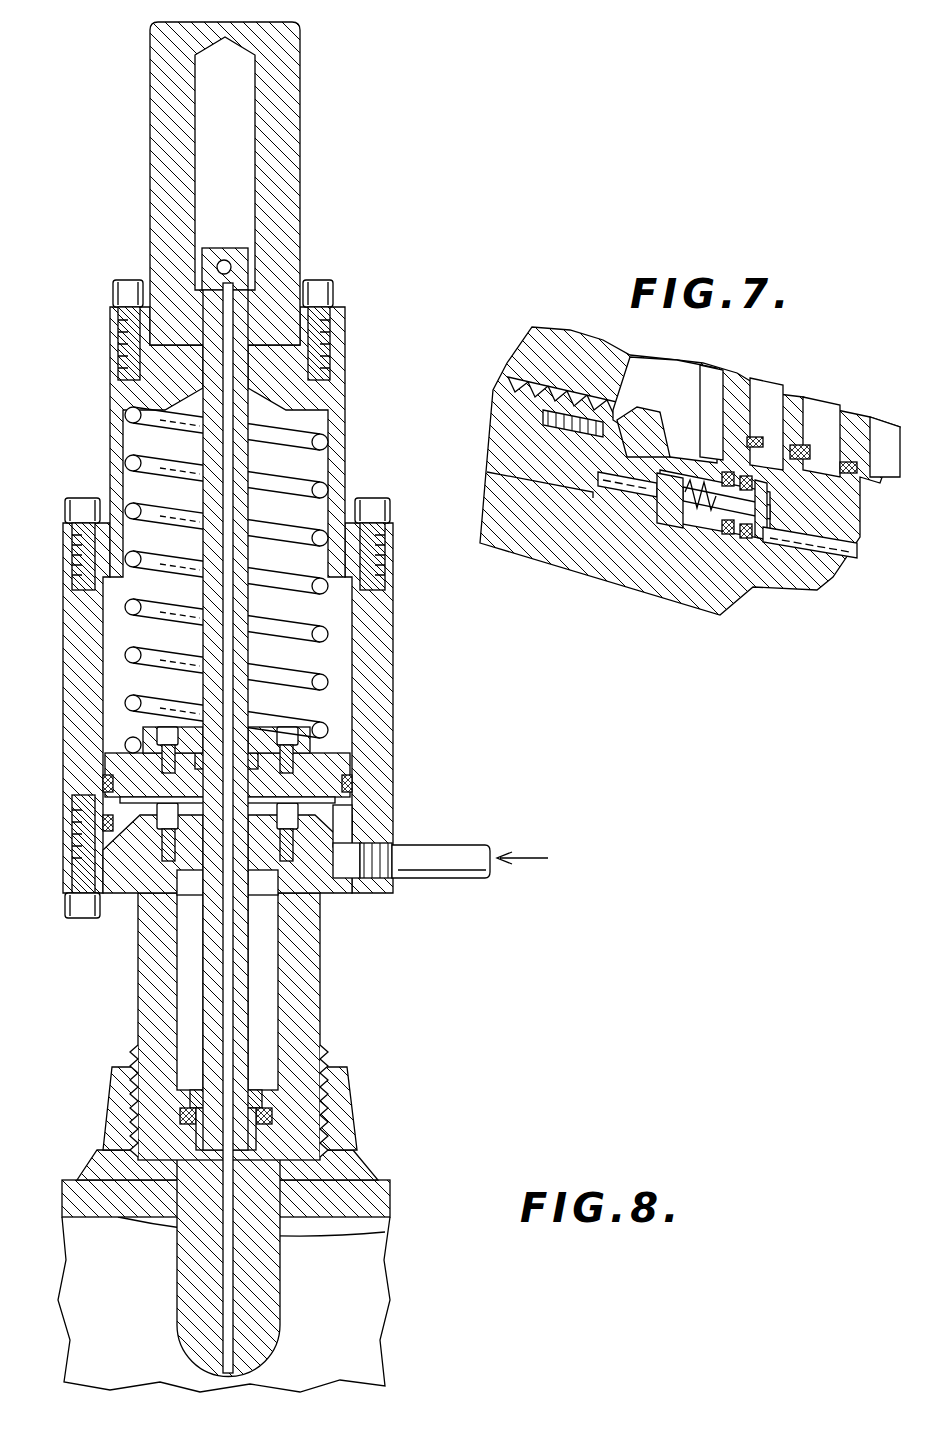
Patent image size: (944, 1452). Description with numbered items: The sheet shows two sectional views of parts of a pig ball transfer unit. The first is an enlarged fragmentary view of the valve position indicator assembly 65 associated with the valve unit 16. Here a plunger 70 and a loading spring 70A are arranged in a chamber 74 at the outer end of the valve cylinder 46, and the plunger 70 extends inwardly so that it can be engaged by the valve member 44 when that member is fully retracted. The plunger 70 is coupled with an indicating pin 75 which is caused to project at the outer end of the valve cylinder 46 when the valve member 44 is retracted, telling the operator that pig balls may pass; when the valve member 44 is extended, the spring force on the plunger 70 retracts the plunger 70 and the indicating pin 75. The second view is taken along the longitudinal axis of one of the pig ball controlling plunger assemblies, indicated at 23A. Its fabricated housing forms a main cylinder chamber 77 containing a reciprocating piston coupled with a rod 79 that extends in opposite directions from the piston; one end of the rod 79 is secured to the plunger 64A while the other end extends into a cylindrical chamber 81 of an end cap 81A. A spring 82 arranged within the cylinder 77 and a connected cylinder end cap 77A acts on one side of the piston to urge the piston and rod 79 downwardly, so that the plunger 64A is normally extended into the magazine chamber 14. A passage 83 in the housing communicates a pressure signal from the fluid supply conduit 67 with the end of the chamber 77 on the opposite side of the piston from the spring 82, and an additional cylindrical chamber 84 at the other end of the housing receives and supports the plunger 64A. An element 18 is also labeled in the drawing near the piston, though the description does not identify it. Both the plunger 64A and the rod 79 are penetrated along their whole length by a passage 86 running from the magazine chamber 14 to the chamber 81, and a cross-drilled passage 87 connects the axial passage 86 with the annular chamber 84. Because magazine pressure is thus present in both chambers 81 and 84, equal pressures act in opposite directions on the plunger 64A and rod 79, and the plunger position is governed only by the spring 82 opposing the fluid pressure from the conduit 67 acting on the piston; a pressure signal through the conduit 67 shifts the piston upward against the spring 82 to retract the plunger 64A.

In FIG. 8, the magazine 14 is at (385, 1230).
In FIG. 8, the valve unit 16 is at (394, 693).
In FIG. 8, the piston plate 18 is at (345, 768).
In FIG. 8, the plunger assembly 23A is at (378, 280).
In FIG. 7, the valve member 44 is at (492, 450).
In FIG. 7, the valve cylinder 46 is at (735, 590).
In FIG. 8, the plunger 64A is at (280, 1295).
In FIG. 7, the valve position indicator assembly 65 is at (661, 545).
In FIG. 8, the fluid supply conduit 67 is at (438, 845).
In FIG. 7, the plunger 70 is at (612, 548).
In FIG. 7, the loading spring 70A is at (690, 545).
In FIG. 7, the chamber 74 is at (672, 545).
In FIG. 7, the indicating pin 75 is at (853, 552).
In FIG. 8, the main cylinder chamber 77 is at (102, 648).
In FIG. 8, the cylinder end cap 77A is at (110, 400).
In FIG. 8, the rod 79 is at (205, 636).
In FIG. 8, the cylindrical chamber 81 is at (200, 152).
In FIG. 8, the end cap 81A is at (285, 103).
In FIG. 8, the spring 82 is at (292, 622).
In FIG. 8, the passage 83 is at (343, 870).
In FIG. 8, the cylindrical chamber 84 is at (185, 990).
In FIG. 8, the passage 86 is at (236, 1000).
In FIG. 8, the cross-drilled passage 87 is at (250, 1088).